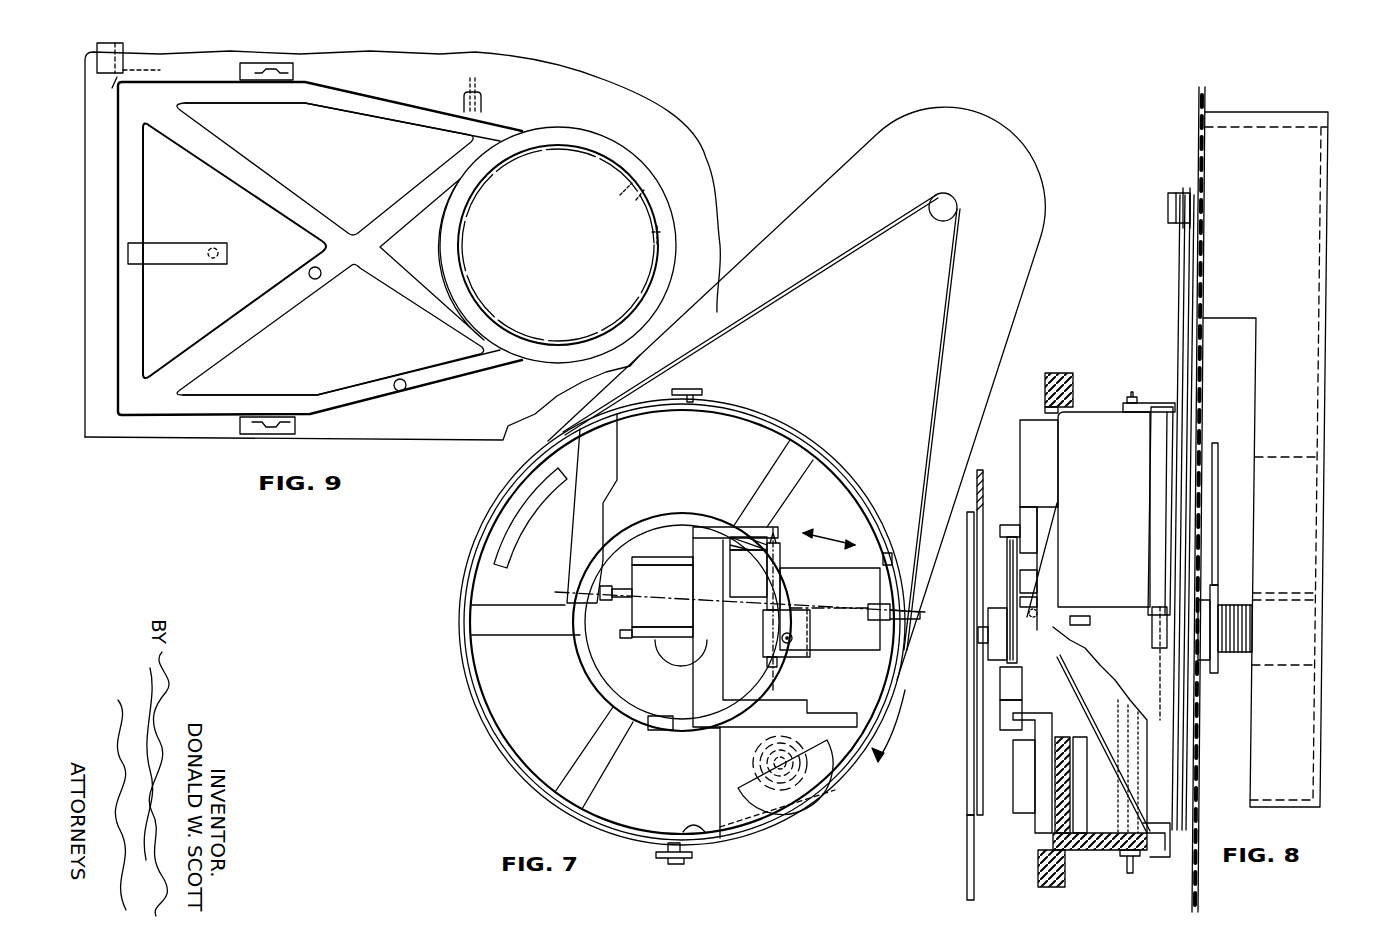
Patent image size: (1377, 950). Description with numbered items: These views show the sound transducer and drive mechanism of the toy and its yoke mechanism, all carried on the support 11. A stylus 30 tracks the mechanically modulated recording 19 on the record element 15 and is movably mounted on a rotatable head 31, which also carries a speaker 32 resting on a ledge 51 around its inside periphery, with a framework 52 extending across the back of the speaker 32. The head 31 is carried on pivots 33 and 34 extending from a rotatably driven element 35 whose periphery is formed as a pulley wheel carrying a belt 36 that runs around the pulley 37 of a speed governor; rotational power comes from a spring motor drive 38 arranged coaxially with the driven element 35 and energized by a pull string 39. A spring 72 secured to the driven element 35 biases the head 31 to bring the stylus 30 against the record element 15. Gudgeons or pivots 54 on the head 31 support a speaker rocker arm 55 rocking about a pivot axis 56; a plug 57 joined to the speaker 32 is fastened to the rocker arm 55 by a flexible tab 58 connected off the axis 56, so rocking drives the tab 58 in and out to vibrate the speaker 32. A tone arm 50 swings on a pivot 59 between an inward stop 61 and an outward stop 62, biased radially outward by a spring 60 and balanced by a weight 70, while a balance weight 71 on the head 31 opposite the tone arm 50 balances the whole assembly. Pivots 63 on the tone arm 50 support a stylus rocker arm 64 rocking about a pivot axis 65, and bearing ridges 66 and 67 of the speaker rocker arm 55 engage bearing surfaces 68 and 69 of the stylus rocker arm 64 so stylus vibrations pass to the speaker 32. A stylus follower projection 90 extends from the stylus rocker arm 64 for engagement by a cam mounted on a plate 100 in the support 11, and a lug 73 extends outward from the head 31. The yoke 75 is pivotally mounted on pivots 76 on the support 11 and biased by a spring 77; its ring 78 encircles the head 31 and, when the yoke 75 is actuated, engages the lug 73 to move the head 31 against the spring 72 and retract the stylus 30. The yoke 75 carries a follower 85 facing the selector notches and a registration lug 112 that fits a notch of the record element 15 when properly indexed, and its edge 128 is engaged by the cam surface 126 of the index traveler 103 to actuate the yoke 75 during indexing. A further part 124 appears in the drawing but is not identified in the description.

In FIG. 9, the support 11 is at (593, 93).
In FIG. 8, the support 11 is at (1204, 357).
In FIG. 8, the record element 15 is at (966, 765).
In FIG. 8, the recording 19 is at (980, 628).
In FIG. 7, the stylus 30 is at (785, 636).
In FIG. 8, the stylus 30 is at (985, 643).
In FIG. 9, the rotatable head 31 is at (648, 185).
In FIG. 8, the rotatable head 31 is at (1100, 412).
In FIG. 7, the speaker 32 is at (572, 711).
In FIG. 8, the speaker 32 is at (1108, 770).
In FIG. 7, the pivot 33 is at (702, 392).
In FIG. 8, the pivot 33 is at (1132, 392).
In FIG. 7, the pivot 34 is at (668, 864).
In FIG. 8, the pivot 34 is at (1129, 866).
In FIG. 7, the rotatably driven element 35 is at (873, 505).
In FIG. 8, the rotatably driven element 35 is at (1180, 478).
In FIG. 7, the belt 36 is at (933, 428).
In FIG. 8, the belt 36 is at (1178, 325).
In FIG. 7, the pulley 37 is at (957, 205).
In FIG. 8, the pulley 37 is at (1172, 190).
In FIG. 8, the spring motor drive 38 is at (1290, 625).
In FIG. 8, the pull string 39 is at (1217, 450).
In FIG. 7, the tone arm 50 is at (727, 756).
In FIG. 8, the tone arm 50 is at (1030, 727).
In FIG. 8, the ledge 51 is at (1150, 855).
In FIG. 7, the framework 52 is at (667, 517).
In FIG. 8, the framework 52 is at (1143, 835).
In FIG. 7, the gudgeons or pivots 54 is at (600, 585).
In FIG. 8, the gudgeons or pivots 54 is at (1050, 613).
In FIG. 7, the speaker rocker arm 55 is at (673, 594).
In FIG. 8, the speaker rocker arm 55 is at (1033, 582).
In FIG. 7, the pivot axis 56 is at (680, 600).
In FIG. 7, the plug 57 is at (683, 645).
In FIG. 8, the plug 57 is at (1056, 662).
In FIG. 7, the flexible tab 58 is at (646, 637).
In FIG. 8, the flexible tab 58 is at (1040, 645).
In FIG. 8, the pivot 59 is at (1052, 775).
In FIG. 7, the spring 60 is at (693, 827).
In FIG. 7, the inward stop 61 is at (662, 716).
In FIG. 7, the outward stop 62 is at (882, 558).
In FIG. 7, the gudgeons or pivots 63 is at (779, 540).
In FIG. 8, the gudgeons or pivots 63 is at (1003, 545).
In FIG. 7, the stylus rocker arm 64 is at (765, 586).
In FIG. 7, the pivot axis 65 is at (773, 530).
In FIG. 7, the bearing ridge 66 is at (667, 557).
In FIG. 7, the bearing ridge 67 is at (632, 630).
In FIG. 7, the bearing surface 68 is at (737, 557).
In FIG. 7, the bearing surface 69 is at (810, 656).
In FIG. 7, the weight 70 is at (818, 783).
In FIG. 7, the balance weight 71 is at (503, 528).
In FIG. 8, the spring 72 is at (1155, 637).
In FIG. 9, the lug 73 is at (665, 240).
In FIG. 7, the lug 73 is at (920, 620).
In FIG. 8, the lug 73 is at (1088, 616).
In FIG. 9, the yoke 75 is at (393, 105).
In FIG. 8, the yoke 75 is at (1062, 373).
In FIG. 9, the pivots 76 is at (293, 72).
In FIG. 9, the spring 77 is at (186, 250).
In FIG. 9, the ring 78 is at (627, 155).
In FIG. 9, the follower 85 is at (321, 278).
In FIG. 7, the stylus follower projection 90 is at (807, 617).
In FIG. 8, the stylus follower projection 90 is at (988, 612).
In FIG. 8, the plate 100 is at (967, 855).
In FIG. 9, the traveler 103 is at (117, 77).
In FIG. 9, the registration lug 112 is at (402, 380).
In FIG. 9, the post 124 is at (492, 99).
In FIG. 9, the cam surface 126 is at (150, 64).
In FIG. 9, the edge 128 is at (135, 165).